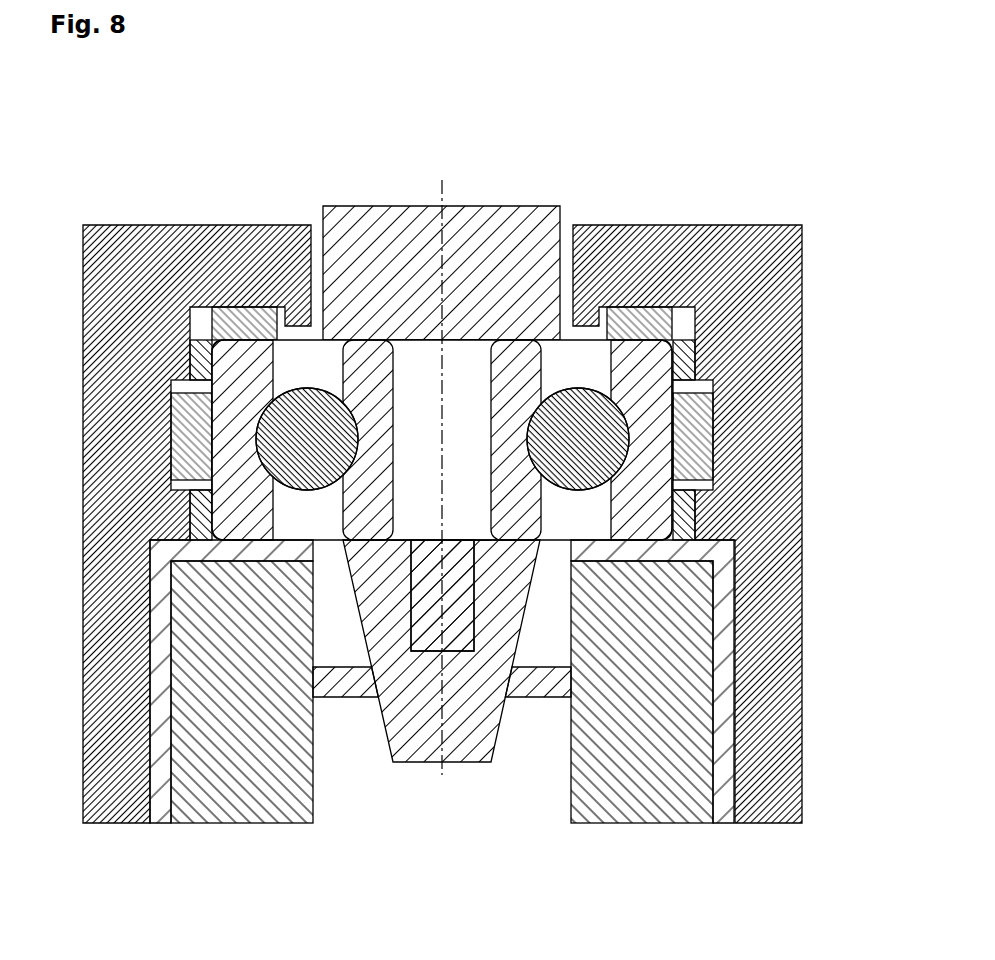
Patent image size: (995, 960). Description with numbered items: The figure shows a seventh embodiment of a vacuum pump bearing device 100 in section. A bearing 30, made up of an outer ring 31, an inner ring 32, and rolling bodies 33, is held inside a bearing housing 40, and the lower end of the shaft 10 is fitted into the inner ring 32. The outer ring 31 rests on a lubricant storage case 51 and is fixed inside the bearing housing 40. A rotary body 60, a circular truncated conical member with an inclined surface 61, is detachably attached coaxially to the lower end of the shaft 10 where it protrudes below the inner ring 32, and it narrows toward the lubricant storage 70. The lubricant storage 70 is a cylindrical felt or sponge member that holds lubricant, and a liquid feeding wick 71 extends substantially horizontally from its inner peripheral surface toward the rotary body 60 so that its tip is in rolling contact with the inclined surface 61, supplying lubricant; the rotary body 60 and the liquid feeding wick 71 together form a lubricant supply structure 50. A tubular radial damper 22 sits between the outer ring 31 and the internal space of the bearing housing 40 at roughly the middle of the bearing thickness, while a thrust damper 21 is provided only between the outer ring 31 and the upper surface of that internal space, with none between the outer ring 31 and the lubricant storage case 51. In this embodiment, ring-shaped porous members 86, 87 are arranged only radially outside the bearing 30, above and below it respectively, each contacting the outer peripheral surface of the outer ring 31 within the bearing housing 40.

The vacuum pump bearing device 100 is at (742, 137).
The shaft 10 is at (502, 248).
The thrust damper 21 is at (272, 320).
The radial damper 22 is at (178, 433).
The bearing 30 is at (344, 369).
The outer ring 31 is at (250, 427).
The inner ring 32 is at (355, 372).
The rolling bodies 33 is at (277, 480).
The bearing housing 40 is at (740, 253).
The lubricant supply structure 50 is at (444, 737).
The lubricant storage case 51 is at (200, 552).
The rotary body 60 is at (486, 697).
The inclined surface 61 is at (362, 630).
The lubricant storage 70 is at (670, 758).
The liquid feeding wick 71 is at (557, 687).
The porous member 86 is at (682, 355).
The porous member 87 is at (682, 513).